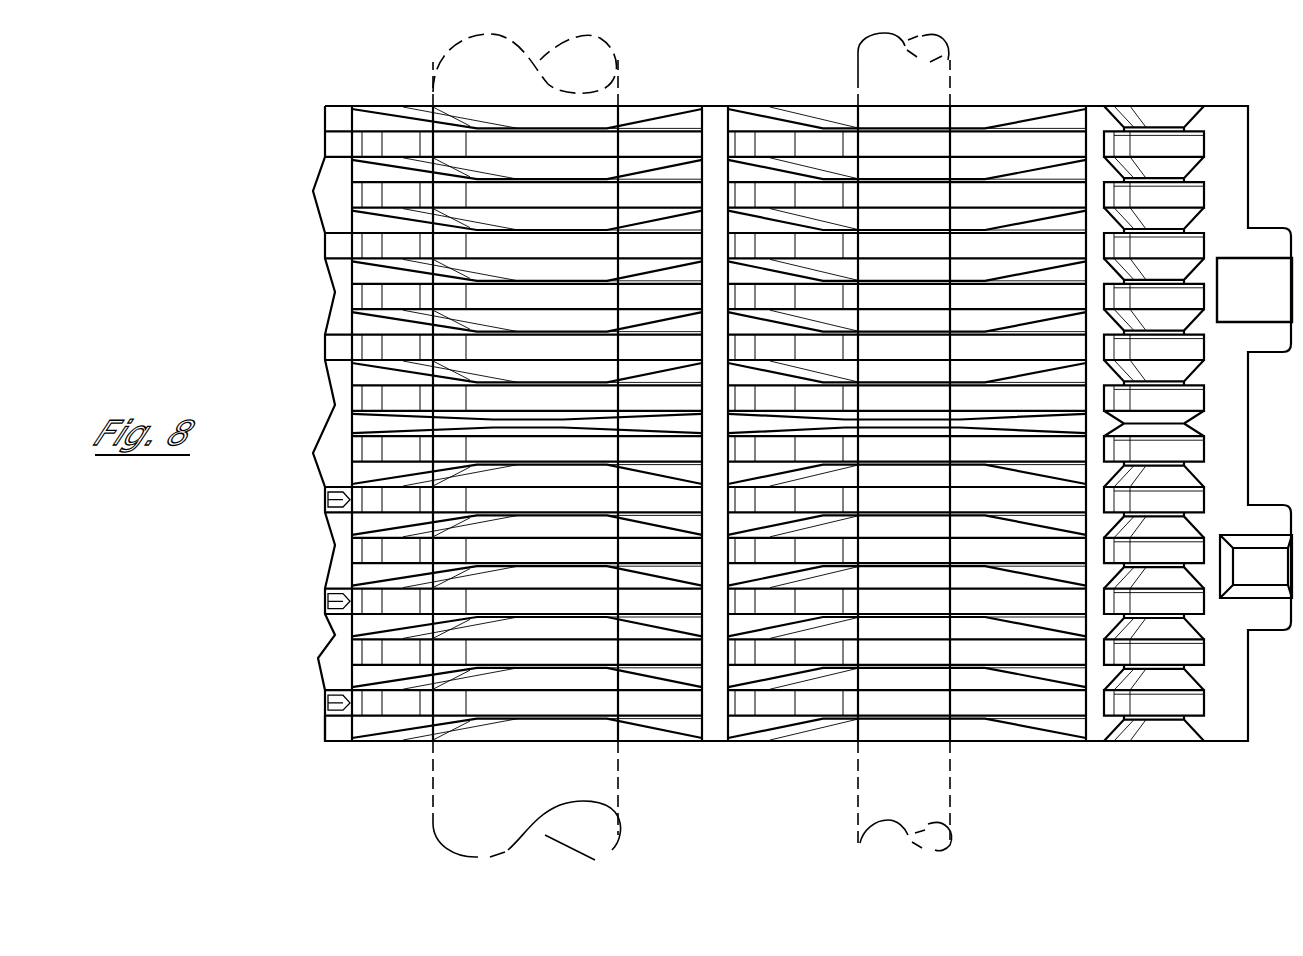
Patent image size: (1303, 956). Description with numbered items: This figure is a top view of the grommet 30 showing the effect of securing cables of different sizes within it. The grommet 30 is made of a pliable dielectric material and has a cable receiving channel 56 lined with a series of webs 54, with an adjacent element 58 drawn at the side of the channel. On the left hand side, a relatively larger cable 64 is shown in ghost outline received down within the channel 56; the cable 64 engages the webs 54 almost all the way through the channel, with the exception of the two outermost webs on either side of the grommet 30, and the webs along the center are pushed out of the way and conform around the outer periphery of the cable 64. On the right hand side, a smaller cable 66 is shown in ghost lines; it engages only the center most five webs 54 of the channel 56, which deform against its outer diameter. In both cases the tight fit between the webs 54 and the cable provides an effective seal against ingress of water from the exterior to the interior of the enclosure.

The grommet 30 is at (1192, 105).
The webs 54 is at (1025, 123).
The cable receiving channel 56 is at (972, 632).
The end plate 58 is at (1053, 248).
The cable 64 is at (467, 782).
The cable 66 is at (897, 792).